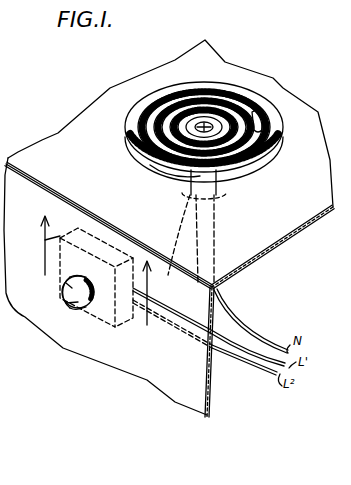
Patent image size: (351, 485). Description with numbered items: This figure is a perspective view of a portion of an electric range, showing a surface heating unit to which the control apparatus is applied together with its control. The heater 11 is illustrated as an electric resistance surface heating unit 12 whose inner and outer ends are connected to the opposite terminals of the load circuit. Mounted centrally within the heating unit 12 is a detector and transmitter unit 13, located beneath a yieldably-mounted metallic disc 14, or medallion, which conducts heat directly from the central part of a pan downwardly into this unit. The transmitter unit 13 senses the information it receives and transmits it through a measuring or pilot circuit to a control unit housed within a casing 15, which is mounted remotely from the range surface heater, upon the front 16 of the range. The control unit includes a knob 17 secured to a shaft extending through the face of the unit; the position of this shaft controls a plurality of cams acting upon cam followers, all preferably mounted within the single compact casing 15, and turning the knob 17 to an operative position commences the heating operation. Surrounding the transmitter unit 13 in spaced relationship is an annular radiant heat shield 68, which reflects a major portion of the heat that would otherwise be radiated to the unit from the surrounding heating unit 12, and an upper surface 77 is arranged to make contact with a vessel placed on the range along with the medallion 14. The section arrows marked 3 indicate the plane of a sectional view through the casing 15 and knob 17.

The heater 11 is at (131, 130).
The electric resistance surface heating unit 12 is at (197, 92).
The detector and transmitter unit 13 is at (210, 125).
The metallic disc 14 is at (177, 173).
The casing 15 is at (112, 327).
The front of the range 16 is at (190, 409).
The knob 17 is at (64, 302).
The annular radiant heat shield 68 is at (226, 193).
The upper surface 77 is at (258, 129).
The section line 3- 3 is at (94, 280).